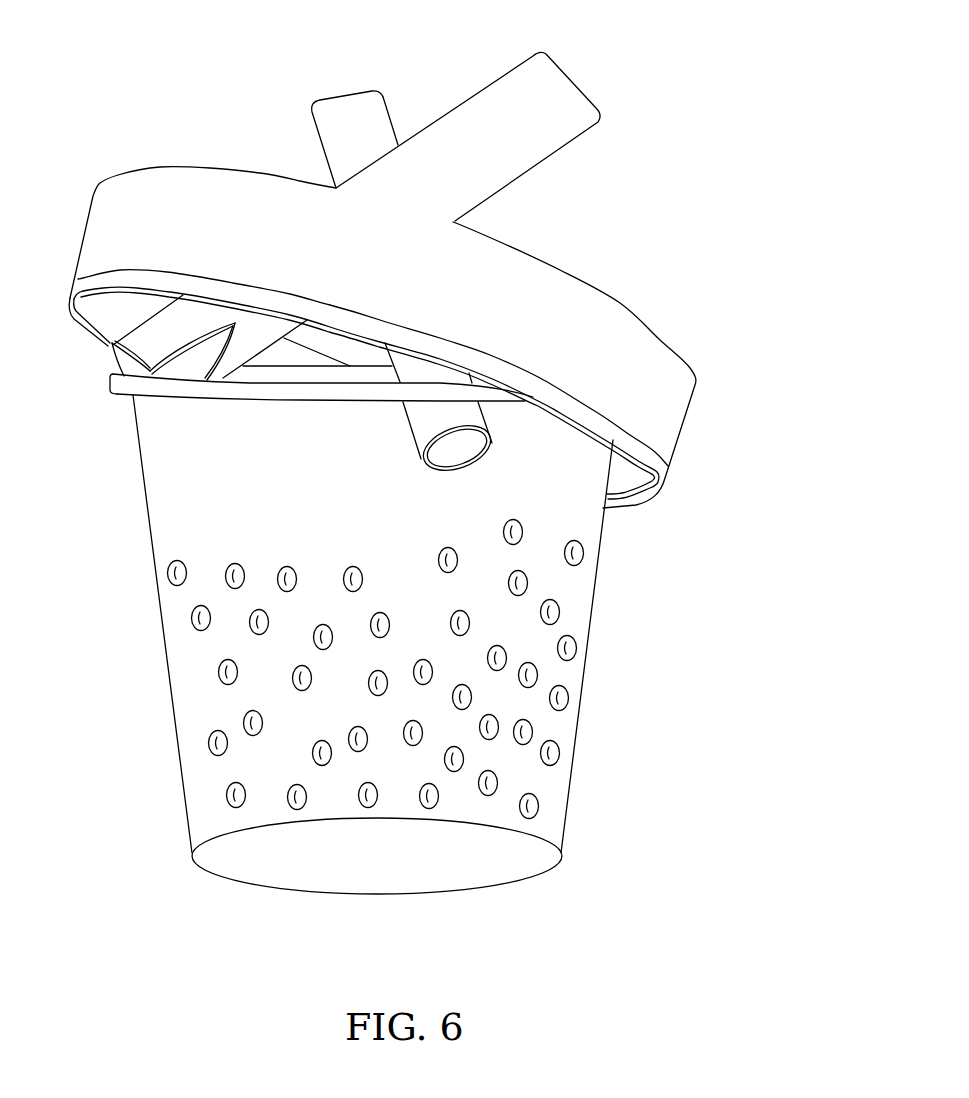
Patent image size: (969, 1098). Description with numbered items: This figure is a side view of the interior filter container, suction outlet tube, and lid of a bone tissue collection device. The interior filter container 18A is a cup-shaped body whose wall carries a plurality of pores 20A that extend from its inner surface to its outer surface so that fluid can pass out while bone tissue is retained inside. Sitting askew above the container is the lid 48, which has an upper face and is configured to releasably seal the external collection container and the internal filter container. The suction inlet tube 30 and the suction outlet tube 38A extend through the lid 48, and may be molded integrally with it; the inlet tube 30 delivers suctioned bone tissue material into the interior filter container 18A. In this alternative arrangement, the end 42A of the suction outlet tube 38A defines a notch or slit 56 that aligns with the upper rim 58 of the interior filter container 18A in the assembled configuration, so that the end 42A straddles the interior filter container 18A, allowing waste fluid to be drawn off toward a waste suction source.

The lid 48 is at (102, 245).
The suction inlet tube 30 is at (316, 129).
The suction outlet tube 38A is at (523, 165).
The end of suction outlet tube 42A is at (112, 344).
The notch or slit 56 is at (181, 371).
The upper rim 58 is at (230, 390).
The interior filter container 18A is at (157, 573).
The pores 20A is at (219, 671).